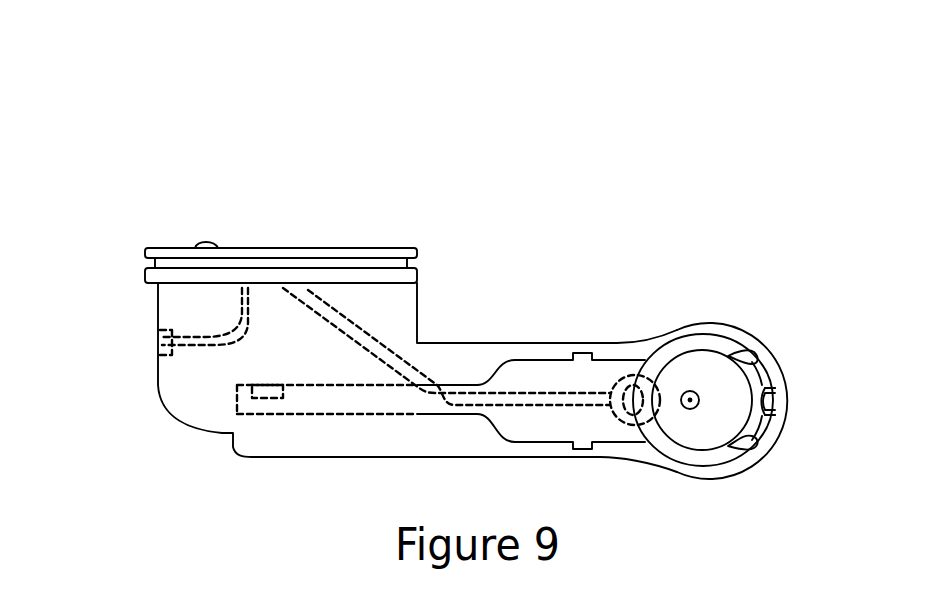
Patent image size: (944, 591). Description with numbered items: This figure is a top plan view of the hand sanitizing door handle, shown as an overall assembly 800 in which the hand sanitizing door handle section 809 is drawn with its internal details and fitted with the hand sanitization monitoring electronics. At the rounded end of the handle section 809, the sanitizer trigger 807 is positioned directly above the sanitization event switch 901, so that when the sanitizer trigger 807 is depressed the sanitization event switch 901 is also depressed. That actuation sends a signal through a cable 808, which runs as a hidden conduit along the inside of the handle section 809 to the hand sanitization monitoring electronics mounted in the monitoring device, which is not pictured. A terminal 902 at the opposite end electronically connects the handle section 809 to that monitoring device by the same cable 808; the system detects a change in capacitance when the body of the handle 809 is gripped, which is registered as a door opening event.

The pump housing assembly 800 is at (462, 248).
The sanitizer trigger 807 is at (728, 353).
The cable 808 is at (247, 303).
The hand sanitizing door handle section 809 is at (388, 327).
The sanitization event switch 901 is at (622, 382).
The terminal 902 is at (157, 345).